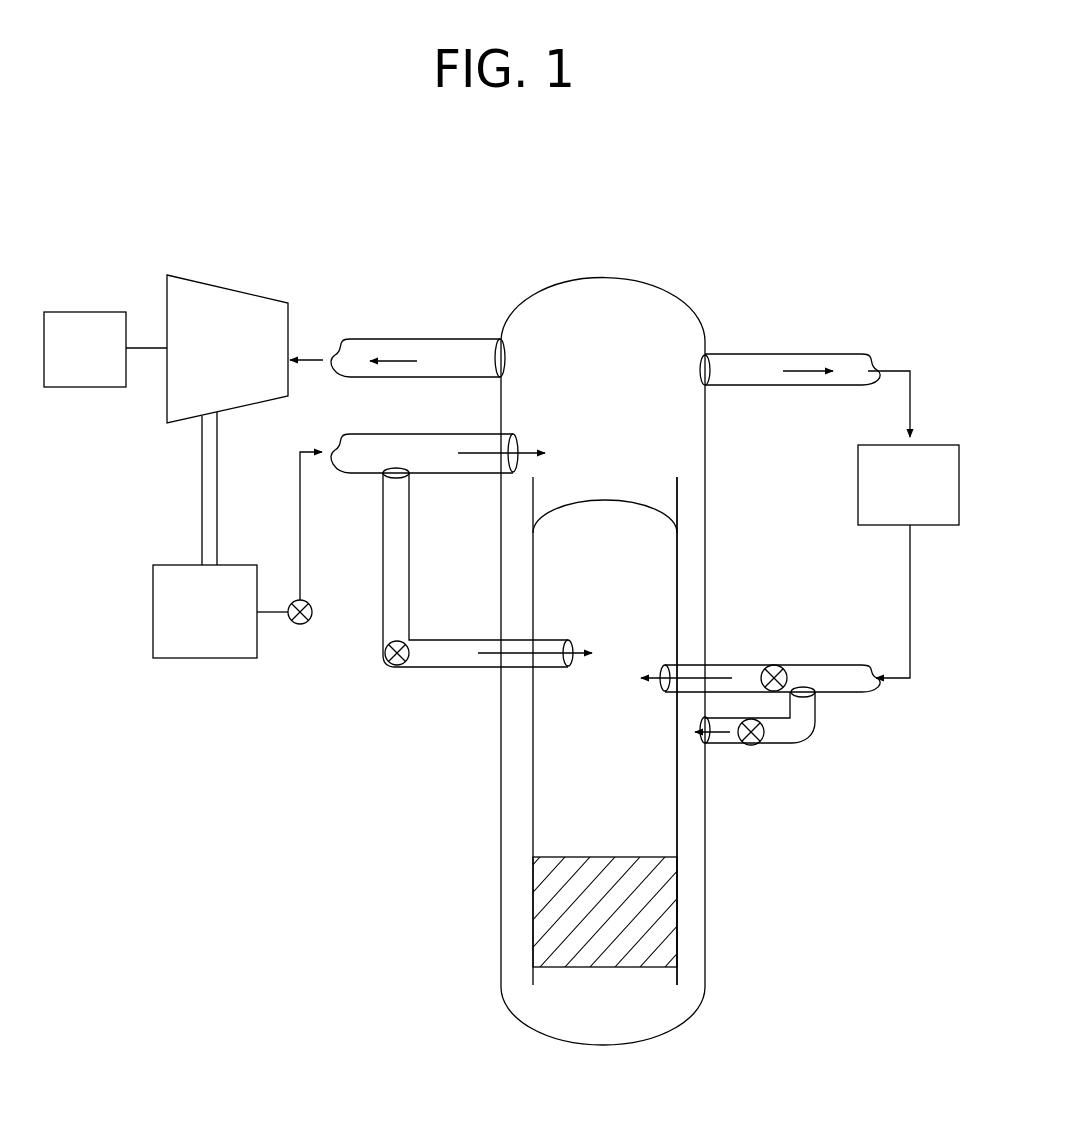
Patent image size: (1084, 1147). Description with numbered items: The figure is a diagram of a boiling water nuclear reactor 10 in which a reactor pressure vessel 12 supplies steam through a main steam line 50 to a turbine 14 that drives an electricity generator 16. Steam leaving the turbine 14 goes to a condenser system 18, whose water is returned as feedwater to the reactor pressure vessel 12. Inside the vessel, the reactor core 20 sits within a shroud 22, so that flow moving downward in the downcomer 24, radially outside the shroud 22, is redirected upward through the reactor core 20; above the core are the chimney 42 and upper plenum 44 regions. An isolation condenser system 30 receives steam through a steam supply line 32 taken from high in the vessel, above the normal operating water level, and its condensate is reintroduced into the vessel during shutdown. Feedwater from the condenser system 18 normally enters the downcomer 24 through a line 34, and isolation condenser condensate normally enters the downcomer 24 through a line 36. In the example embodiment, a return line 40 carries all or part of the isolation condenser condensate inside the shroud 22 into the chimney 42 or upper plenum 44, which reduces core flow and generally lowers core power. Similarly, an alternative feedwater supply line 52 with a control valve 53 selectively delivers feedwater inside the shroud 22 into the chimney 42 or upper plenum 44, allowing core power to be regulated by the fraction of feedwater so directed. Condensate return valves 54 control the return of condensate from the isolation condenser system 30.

The boiling water nuclear reactor 10 is at (700, 288).
The reactor pressure vessel 12 is at (689, 1022).
The turbine 14 is at (220, 284).
The electricity generator 16 is at (93, 388).
The condenser system 18 is at (153, 618).
The reactor core 20 is at (655, 930).
The shroud 22 is at (681, 839).
The downcomer 24 is at (689, 803).
The isolation condenser system 30 is at (908, 524).
The isolation condenser system steam supply line 32 is at (798, 363).
The feedwater line 34 is at (432, 445).
The condensate line 36 is at (733, 743).
The return line 40 is at (715, 678).
The chimney 42 is at (645, 603).
The upper plenum 44 is at (612, 545).
The main steam line 50 is at (382, 350).
The alternative feedwater supply line 52 is at (464, 662).
The control valve 53 is at (385, 651).
The condensate return valve 54 is at (788, 670).